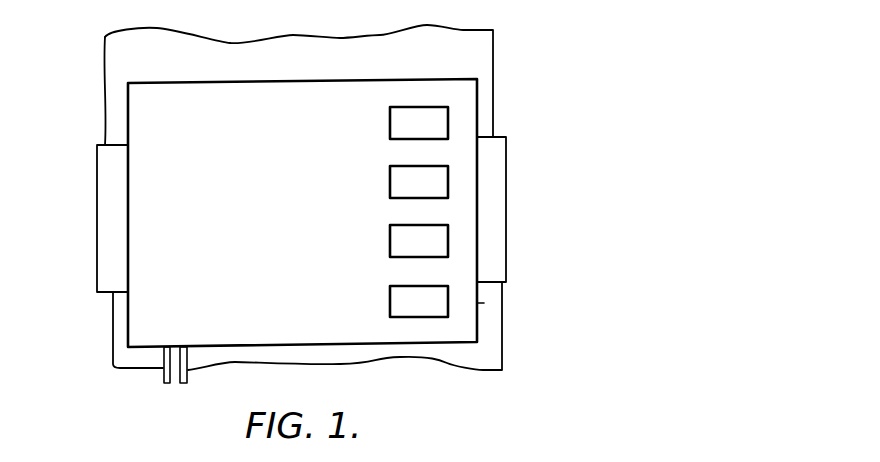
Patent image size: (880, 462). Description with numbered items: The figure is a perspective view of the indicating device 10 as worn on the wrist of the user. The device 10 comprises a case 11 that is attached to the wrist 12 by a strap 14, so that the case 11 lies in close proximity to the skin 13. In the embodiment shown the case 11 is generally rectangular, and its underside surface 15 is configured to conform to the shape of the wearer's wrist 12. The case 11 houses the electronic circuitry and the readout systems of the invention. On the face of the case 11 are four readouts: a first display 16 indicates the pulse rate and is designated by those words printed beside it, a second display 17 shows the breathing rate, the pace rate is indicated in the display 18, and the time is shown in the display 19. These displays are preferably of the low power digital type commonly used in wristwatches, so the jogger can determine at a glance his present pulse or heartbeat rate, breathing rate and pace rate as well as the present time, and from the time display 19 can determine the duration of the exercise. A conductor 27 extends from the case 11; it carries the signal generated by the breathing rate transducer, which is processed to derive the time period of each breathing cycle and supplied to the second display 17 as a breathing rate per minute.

The device 10 is at (185, 138).
The case 11 is at (478, 100).
The wrist 12 is at (490, 355).
The skin 13 is at (118, 310).
The strap 14 is at (495, 168).
The underside surface 15 is at (480, 303).
The first display 16 is at (440, 113).
The second display 17 is at (437, 173).
The display 18 is at (442, 240).
The display 19 is at (398, 310).
The conductor 27 is at (163, 378).